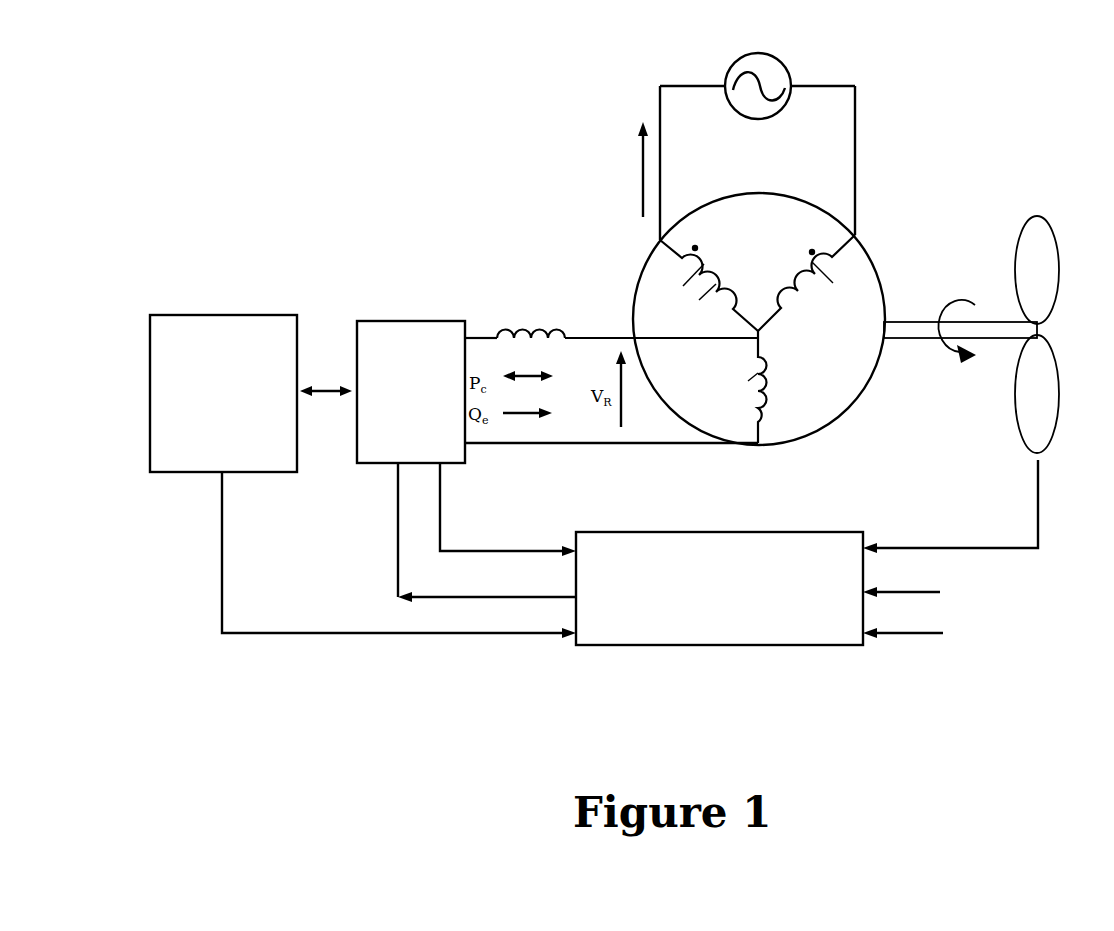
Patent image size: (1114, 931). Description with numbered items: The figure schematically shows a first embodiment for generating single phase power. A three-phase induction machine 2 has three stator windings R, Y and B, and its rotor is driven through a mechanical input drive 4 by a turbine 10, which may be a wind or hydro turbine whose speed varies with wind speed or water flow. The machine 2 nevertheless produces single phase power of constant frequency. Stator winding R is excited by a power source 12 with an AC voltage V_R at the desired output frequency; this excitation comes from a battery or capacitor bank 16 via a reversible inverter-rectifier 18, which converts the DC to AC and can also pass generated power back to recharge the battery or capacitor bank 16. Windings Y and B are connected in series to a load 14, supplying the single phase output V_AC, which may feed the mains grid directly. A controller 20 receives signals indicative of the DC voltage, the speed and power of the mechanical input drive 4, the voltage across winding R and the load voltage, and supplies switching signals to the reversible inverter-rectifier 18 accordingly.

The three-phase induction machine 2 is at (946, 168).
The mechanical input drive 4 is at (902, 332).
The turbine 10 is at (1058, 262).
The power source 12 is at (332, 314).
The load 14 is at (792, 66).
The battery or capacitor bank 16 is at (223, 393).
The reversible inverter-rectifier 18 is at (411, 392).
The controller 20 is at (630, 553).